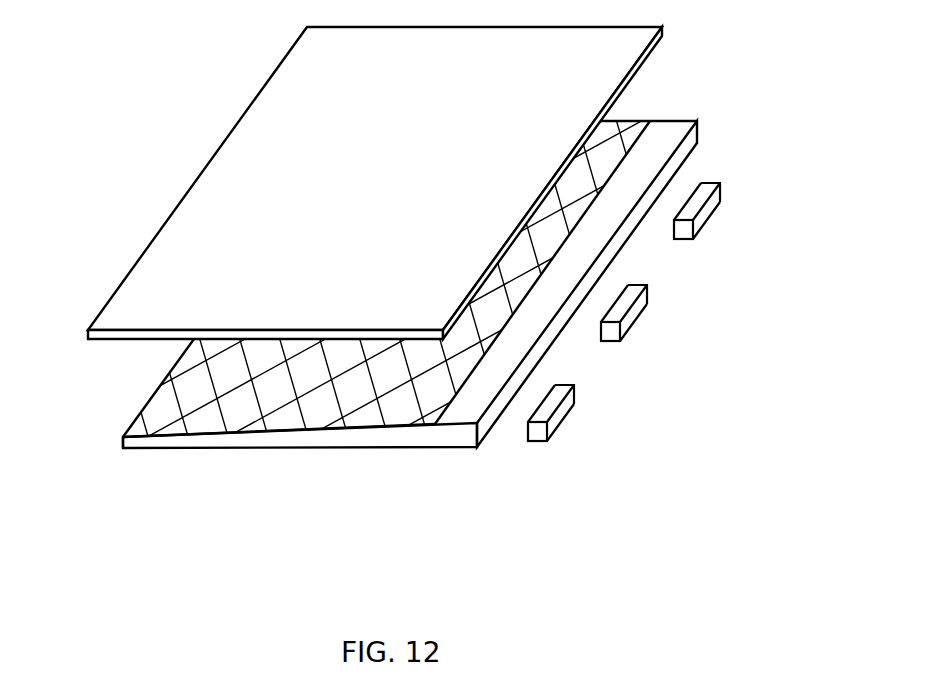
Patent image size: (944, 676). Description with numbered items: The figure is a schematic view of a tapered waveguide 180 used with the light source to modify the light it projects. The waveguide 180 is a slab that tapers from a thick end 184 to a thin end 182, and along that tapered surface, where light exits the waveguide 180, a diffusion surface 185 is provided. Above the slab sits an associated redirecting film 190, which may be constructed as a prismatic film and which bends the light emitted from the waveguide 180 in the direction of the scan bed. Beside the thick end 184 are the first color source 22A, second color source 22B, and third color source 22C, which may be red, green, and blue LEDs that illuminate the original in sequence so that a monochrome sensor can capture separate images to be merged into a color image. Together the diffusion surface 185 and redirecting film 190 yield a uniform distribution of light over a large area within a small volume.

The redirecting film 190 is at (258, 212).
The diffusion surface 185 is at (172, 405).
The thin end 182 is at (117, 445).
The waveguide 180 is at (302, 435).
The thick end 184 is at (488, 450).
The first color source 22A is at (566, 415).
The second color source 22B is at (640, 317).
The third color source 22C is at (713, 218).